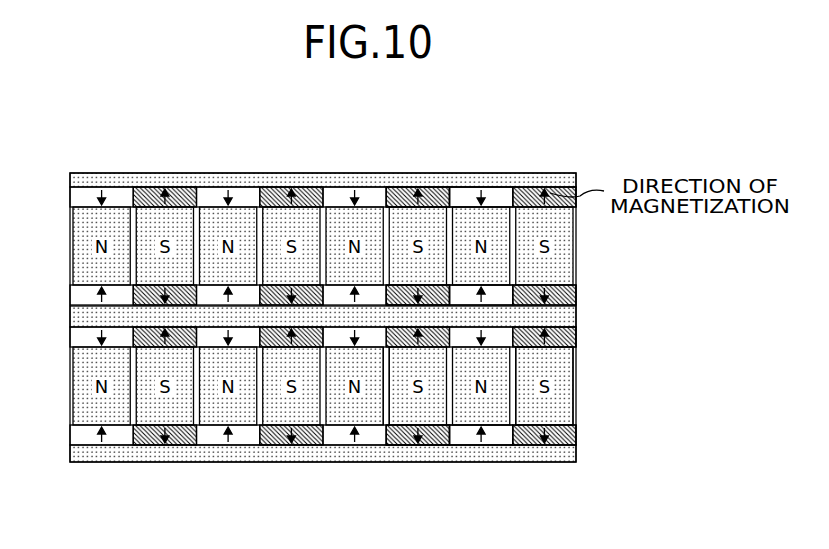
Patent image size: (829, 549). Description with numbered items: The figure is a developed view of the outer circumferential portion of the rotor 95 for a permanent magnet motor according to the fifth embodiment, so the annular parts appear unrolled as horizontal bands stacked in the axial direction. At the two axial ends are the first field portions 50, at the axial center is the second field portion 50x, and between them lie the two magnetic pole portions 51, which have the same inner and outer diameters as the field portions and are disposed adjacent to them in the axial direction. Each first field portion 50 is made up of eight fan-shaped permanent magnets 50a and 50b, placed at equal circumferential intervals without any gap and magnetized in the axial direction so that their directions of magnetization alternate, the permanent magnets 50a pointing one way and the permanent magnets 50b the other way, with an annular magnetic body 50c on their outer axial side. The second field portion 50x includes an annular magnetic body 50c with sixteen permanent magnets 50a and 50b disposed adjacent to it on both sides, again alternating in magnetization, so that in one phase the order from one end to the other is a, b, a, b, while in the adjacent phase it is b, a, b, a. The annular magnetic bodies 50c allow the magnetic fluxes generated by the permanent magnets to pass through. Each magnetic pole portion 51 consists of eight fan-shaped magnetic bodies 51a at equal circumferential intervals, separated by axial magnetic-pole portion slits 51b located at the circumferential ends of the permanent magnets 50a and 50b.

The rotor 95 is at (610, 134).
The first field portion 50 is at (68, 173).
The second field portion 50x is at (68, 285).
The permanent magnet 50a is at (407, 293).
The permanent magnet 50b is at (432, 185).
The annular magnetic body 50c is at (305, 181).
The magnetic pole portion 51 is at (68, 207).
The magnetic body 51a is at (558, 413).
The magnetic-pole portion slit 51b is at (387, 405).